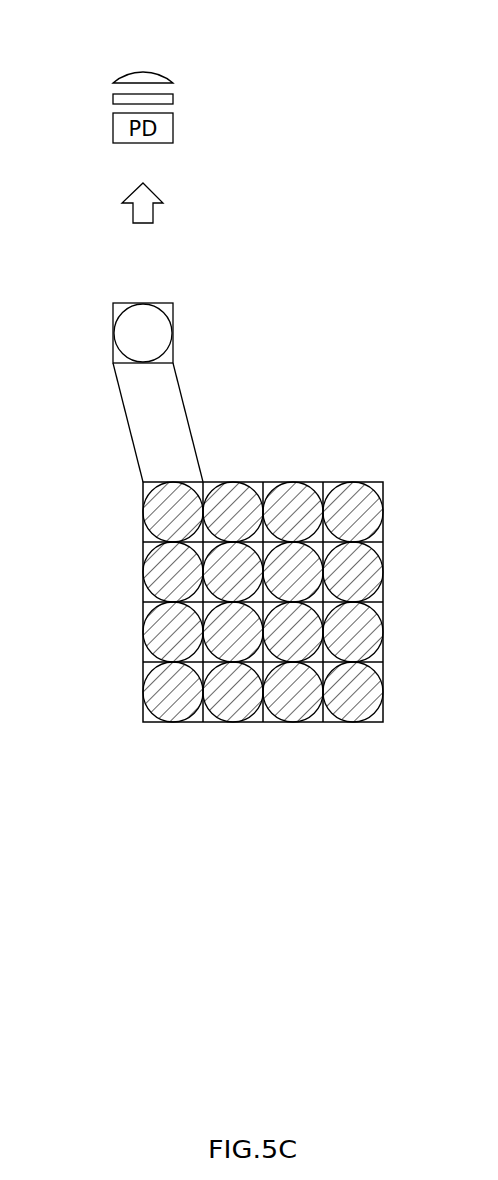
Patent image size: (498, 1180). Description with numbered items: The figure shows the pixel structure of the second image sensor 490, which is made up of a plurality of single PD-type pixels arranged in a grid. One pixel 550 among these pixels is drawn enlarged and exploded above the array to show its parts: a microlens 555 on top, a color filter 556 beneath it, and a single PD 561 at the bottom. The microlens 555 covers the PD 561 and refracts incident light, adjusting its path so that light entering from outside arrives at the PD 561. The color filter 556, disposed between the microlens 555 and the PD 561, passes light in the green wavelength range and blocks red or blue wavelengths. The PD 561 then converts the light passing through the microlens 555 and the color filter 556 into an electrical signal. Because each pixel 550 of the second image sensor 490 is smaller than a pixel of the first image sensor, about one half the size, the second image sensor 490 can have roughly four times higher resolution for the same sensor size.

The second image sensor 490 is at (303, 468).
The pixel 550 is at (164, 332).
The microlens 555 is at (143, 71).
The color filter 556 is at (113, 98).
The PD 561 is at (114, 322).